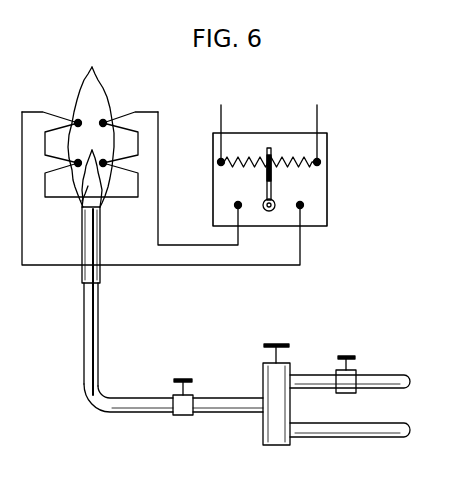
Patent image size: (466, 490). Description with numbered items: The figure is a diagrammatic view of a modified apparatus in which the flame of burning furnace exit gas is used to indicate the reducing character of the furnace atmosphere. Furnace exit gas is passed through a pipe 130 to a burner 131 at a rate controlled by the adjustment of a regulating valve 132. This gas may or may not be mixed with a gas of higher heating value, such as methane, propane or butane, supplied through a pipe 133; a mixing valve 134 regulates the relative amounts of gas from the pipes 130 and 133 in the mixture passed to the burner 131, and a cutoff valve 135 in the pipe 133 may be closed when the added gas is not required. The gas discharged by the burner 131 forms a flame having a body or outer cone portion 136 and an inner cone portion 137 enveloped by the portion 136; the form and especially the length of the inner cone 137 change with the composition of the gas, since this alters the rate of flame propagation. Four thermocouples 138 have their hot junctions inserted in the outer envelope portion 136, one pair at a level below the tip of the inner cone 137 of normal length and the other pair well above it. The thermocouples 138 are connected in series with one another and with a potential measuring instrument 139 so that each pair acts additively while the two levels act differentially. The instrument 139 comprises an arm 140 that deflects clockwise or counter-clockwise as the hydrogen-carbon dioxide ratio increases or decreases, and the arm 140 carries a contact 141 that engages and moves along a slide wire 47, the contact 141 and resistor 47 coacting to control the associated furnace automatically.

The slide wire 47 is at (258, 158).
The pipe 130 is at (367, 437).
The burner 131 is at (99, 229).
The regulating valve 132 is at (188, 415).
The pipe 133 is at (386, 375).
The mixing valve 134 is at (264, 373).
The cutoff valve 135 is at (351, 393).
The outer cone portion 136 is at (98, 90).
The inner cone portion 137 is at (80, 201).
The thermocouples 138 is at (112, 143).
The potential measuring instrument 139 is at (213, 158).
The arm 140 is at (272, 189).
The contact 141 is at (271, 153).